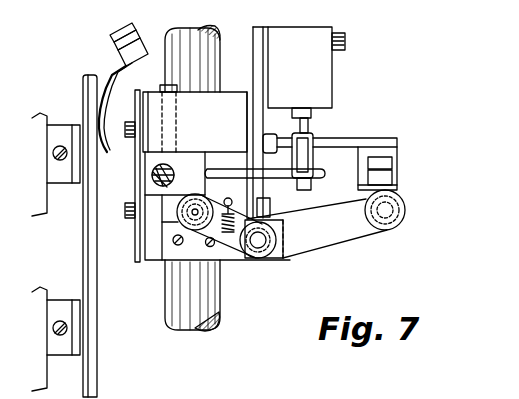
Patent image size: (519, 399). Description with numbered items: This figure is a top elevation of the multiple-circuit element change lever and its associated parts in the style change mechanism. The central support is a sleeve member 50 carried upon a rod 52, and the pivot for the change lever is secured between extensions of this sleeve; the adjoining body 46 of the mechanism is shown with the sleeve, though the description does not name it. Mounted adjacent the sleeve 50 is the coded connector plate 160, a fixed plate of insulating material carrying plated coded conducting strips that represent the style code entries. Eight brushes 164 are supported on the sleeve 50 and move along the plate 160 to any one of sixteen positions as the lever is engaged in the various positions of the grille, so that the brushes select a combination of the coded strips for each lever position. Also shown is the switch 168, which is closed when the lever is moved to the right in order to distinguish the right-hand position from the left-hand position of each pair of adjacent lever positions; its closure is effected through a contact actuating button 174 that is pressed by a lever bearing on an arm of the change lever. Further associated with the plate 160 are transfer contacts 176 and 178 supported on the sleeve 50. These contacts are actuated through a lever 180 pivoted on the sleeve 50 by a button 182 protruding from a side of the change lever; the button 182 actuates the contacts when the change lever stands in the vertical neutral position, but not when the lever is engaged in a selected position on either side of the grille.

The housing 46 is at (180, 124).
The sleeve member 50 is at (229, 100).
The rod 52 is at (214, 306).
The coded connector plate 160 is at (98, 364).
The brushes 164 is at (112, 90).
The switch 168 is at (318, 83).
The contact actuating button 174 is at (311, 113).
The transfer contact 176 is at (393, 163).
The transfer contact 178 is at (395, 184).
The lever 180 is at (330, 236).
The button 182 is at (175, 196).